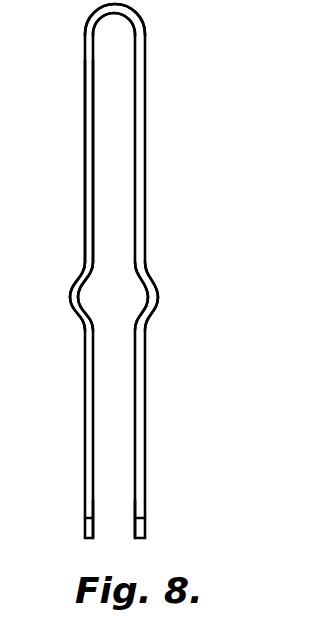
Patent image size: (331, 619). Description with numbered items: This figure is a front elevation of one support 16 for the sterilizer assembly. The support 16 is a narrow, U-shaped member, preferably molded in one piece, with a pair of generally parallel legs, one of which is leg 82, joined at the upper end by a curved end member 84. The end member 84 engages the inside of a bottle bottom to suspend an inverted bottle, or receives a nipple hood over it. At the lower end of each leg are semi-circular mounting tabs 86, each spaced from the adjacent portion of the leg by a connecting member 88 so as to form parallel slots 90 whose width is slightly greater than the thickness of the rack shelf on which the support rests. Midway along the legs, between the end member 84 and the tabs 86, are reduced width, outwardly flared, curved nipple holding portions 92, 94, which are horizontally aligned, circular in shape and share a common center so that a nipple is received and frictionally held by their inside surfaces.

The support 16 is at (145, 100).
The leg 82 is at (85, 163).
The curved end member 84 is at (118, 4).
The mounting tab 86 is at (85, 528).
The connecting member 88 is at (137, 518).
The slot 90 is at (87, 516).
The nipple holding portion 92 is at (158, 290).
The nipple holding portion 94 is at (70, 292).